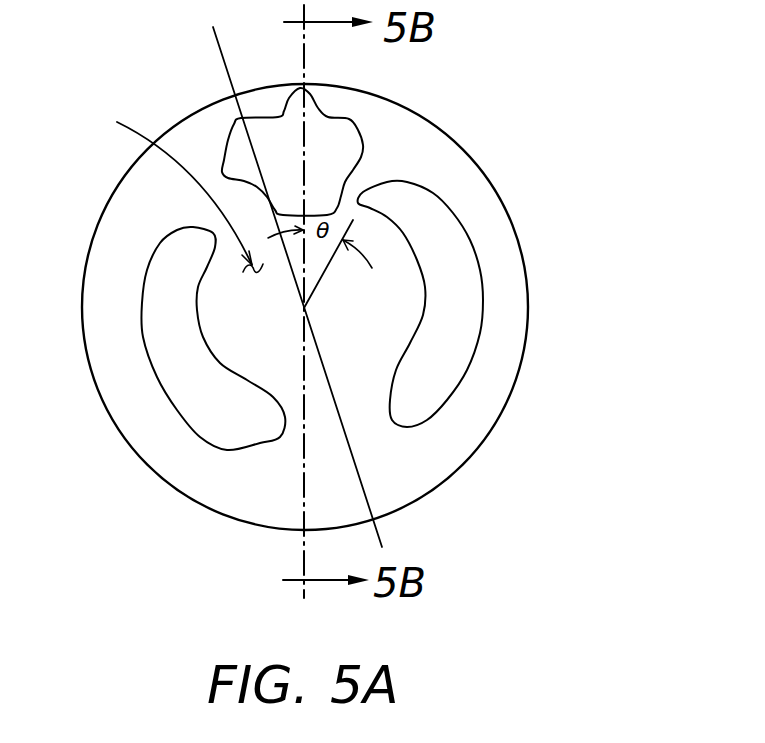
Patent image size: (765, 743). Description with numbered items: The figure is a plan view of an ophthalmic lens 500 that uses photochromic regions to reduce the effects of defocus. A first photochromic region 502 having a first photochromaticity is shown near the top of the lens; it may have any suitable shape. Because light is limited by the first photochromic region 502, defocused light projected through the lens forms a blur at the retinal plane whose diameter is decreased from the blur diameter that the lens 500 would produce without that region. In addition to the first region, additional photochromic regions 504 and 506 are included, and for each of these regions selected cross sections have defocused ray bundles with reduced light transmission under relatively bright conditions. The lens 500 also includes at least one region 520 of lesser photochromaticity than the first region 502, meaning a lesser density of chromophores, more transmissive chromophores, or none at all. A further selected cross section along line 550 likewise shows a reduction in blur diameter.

The lens 500 is at (530, 102).
The first photochromic region 502 is at (355, 124).
The additional photochromic region 504 is at (475, 262).
The additional photochromic region 506 is at (163, 397).
The region of lesser photochromaticity 520 is at (166, 191).
The line 550 is at (215, 53).